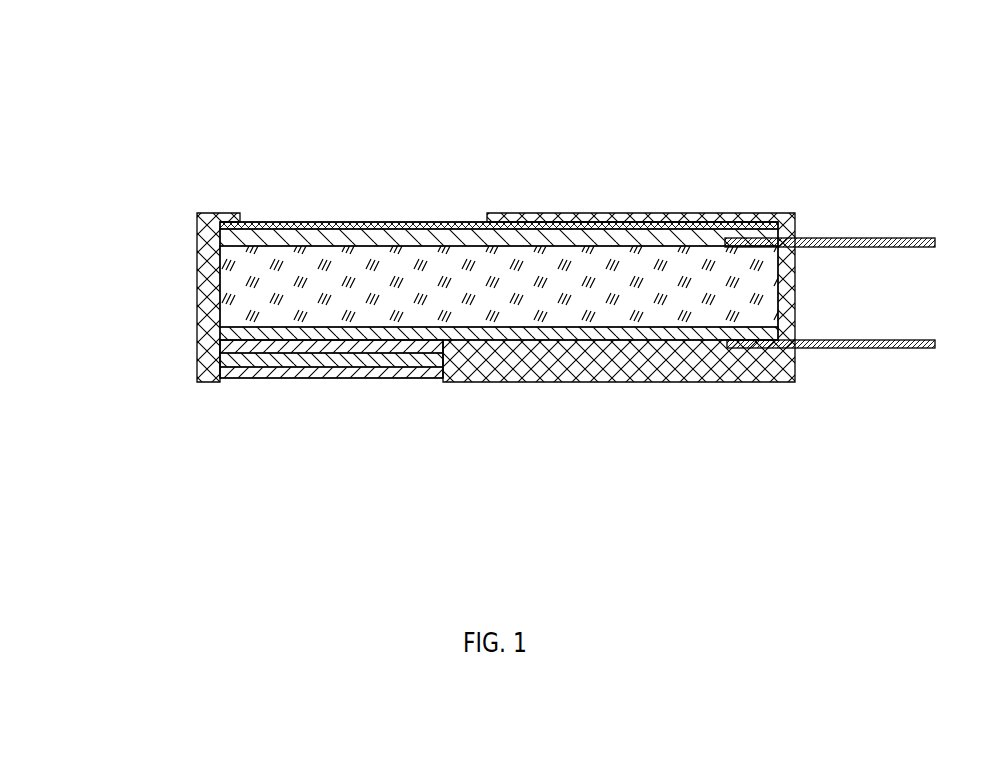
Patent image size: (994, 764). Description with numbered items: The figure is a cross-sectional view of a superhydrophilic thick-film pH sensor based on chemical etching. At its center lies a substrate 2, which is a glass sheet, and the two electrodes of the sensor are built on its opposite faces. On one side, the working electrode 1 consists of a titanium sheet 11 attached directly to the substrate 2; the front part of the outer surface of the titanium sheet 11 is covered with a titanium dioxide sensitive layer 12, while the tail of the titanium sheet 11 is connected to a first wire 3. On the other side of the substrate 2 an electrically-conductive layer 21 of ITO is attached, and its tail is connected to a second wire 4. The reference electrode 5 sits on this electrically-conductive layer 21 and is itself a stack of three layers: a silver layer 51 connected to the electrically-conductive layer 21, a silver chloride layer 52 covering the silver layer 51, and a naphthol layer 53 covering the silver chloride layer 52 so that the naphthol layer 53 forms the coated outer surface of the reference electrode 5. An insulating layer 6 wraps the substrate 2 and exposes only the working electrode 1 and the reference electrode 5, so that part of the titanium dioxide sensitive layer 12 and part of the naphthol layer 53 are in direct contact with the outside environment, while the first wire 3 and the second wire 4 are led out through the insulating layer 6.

The working electrode 1 is at (336, 222).
The titanium sheet 11 is at (255, 233).
The titanium dioxide sensitive layer 12 is at (380, 222).
The substrate 2 is at (567, 277).
The electrically-conductive layer 21 is at (643, 340).
The first wire 3 is at (810, 237).
The second wire 4 is at (813, 350).
The reference electrode 5 is at (312, 450).
The silver layer 51 is at (410, 345).
The silver chloride layer 52 is at (355, 372).
The naphthol layer 53 is at (317, 382).
The insulating layer 6 is at (197, 336).